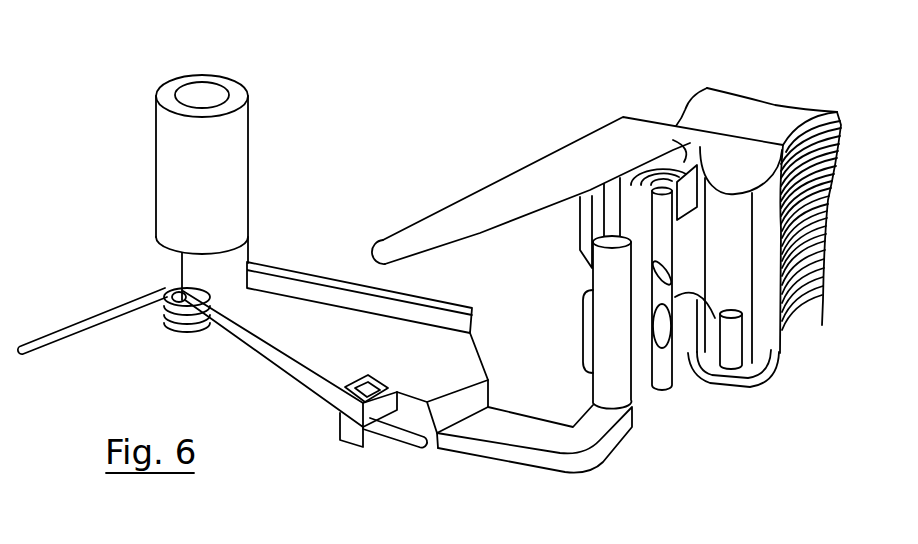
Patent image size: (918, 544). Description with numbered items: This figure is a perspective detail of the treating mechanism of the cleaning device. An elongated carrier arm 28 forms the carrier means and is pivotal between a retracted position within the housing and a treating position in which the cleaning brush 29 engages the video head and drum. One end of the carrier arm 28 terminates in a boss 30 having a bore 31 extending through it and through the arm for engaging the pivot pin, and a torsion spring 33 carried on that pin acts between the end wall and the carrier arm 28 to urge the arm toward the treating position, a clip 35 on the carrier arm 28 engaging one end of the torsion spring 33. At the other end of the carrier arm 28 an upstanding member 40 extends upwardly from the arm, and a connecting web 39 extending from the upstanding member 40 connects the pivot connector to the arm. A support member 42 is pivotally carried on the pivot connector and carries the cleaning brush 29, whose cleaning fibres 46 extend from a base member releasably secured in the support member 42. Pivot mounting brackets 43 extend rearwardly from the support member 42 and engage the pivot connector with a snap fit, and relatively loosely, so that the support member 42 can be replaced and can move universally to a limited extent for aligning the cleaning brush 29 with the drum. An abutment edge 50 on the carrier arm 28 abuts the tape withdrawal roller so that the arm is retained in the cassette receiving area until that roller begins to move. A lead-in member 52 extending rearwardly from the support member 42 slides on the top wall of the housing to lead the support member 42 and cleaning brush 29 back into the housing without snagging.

The carrier arm 28 is at (313, 352).
The cleaning brush 29 is at (748, 117).
The boss 30 is at (227, 158).
The bore 31 is at (210, 95).
The torsion spring 33 is at (164, 325).
The clip 35 is at (370, 434).
The connecting web 39 is at (640, 358).
The upstanding member 40 is at (610, 382).
The support member 42 is at (700, 140).
The pivot mounting brackets 43 is at (686, 198).
The cleaning fibres 46 is at (808, 198).
The abutment edge 50 is at (284, 264).
The lead-in member 52 is at (468, 208).